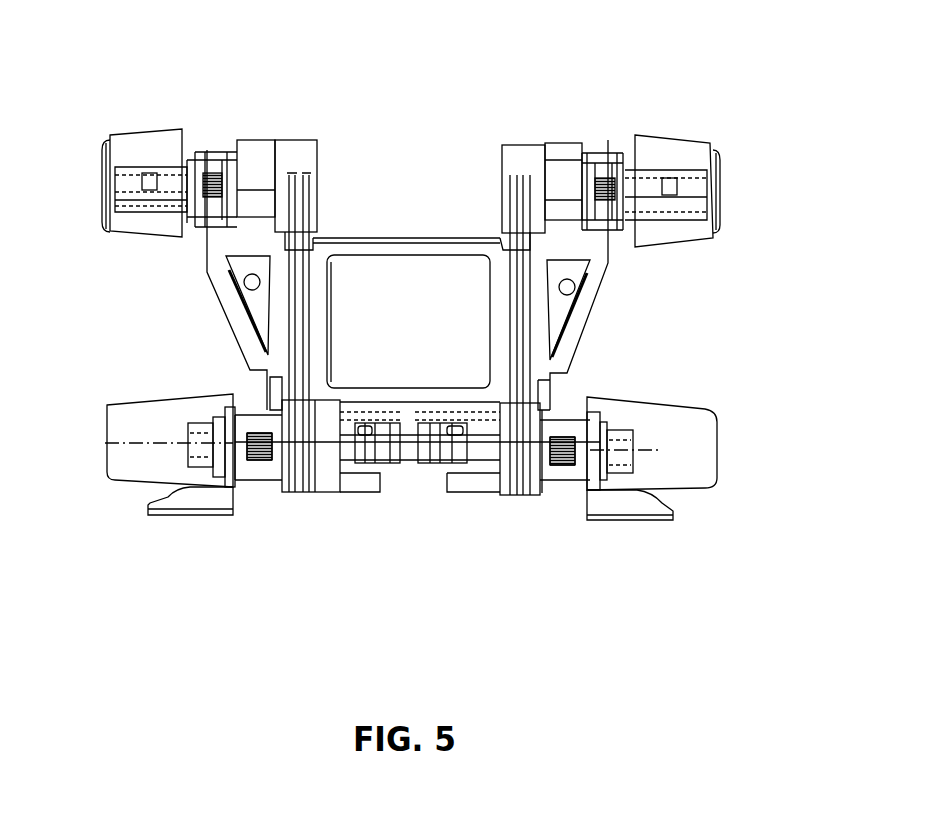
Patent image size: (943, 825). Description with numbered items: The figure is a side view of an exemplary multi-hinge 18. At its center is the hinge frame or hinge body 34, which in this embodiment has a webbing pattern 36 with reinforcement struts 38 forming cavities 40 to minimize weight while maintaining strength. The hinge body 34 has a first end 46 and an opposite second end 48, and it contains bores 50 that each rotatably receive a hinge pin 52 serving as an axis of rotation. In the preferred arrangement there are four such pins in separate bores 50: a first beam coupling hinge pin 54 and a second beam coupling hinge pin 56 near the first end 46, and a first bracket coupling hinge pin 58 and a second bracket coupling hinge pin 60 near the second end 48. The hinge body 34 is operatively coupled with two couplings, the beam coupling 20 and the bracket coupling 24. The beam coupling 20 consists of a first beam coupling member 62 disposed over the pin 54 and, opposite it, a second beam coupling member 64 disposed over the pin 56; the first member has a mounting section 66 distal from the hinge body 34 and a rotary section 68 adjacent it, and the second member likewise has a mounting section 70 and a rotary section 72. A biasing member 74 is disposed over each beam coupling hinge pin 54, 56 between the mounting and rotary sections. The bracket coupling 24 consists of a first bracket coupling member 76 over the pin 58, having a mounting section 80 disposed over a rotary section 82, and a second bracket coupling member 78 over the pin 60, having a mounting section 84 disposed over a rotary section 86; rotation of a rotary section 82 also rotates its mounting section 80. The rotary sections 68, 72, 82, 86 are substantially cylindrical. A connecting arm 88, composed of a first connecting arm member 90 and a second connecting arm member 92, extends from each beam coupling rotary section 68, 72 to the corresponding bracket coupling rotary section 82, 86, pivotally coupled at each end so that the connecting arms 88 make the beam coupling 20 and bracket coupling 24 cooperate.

The multi-hinge 18 is at (407, 55).
The beam coupling 20 is at (683, 507).
The bracket coupling 24 is at (657, 132).
The hinge body 34 is at (423, 325).
The webbing pattern 36 is at (558, 310).
The reinforcement struts 38 is at (232, 302).
The cavities 40 is at (465, 277).
The first end 46 is at (468, 483).
The second end 48 is at (557, 142).
The bore 50 is at (400, 473).
The hinge pin 52 is at (243, 180).
The first beam coupling hinge pin 54 is at (345, 447).
The second beam coupling hinge pin 56 is at (575, 462).
The first bracket coupling hinge pin 58 is at (160, 180).
The second bracket coupling hinge pin 60 is at (646, 192).
The first beam coupling member 62 is at (128, 482).
The second beam coupling member 64 is at (700, 477).
The mounting section 66 is at (110, 412).
The rotary section 68 is at (290, 492).
The mounting section 70 is at (718, 467).
The rotary section 72 is at (508, 495).
The biasing member 74 is at (220, 172).
The first bracket coupling member 76 is at (132, 135).
The second bracket coupling member 78 is at (670, 145).
The mounting section 80 is at (103, 148).
The rotary section 82 is at (297, 142).
The mounting section 84 is at (713, 148).
The rotary section 86 is at (510, 150).
The connecting arm 88 is at (308, 277).
The first connecting arm member 90 is at (307, 182).
The second connecting arm member 92 is at (290, 172).